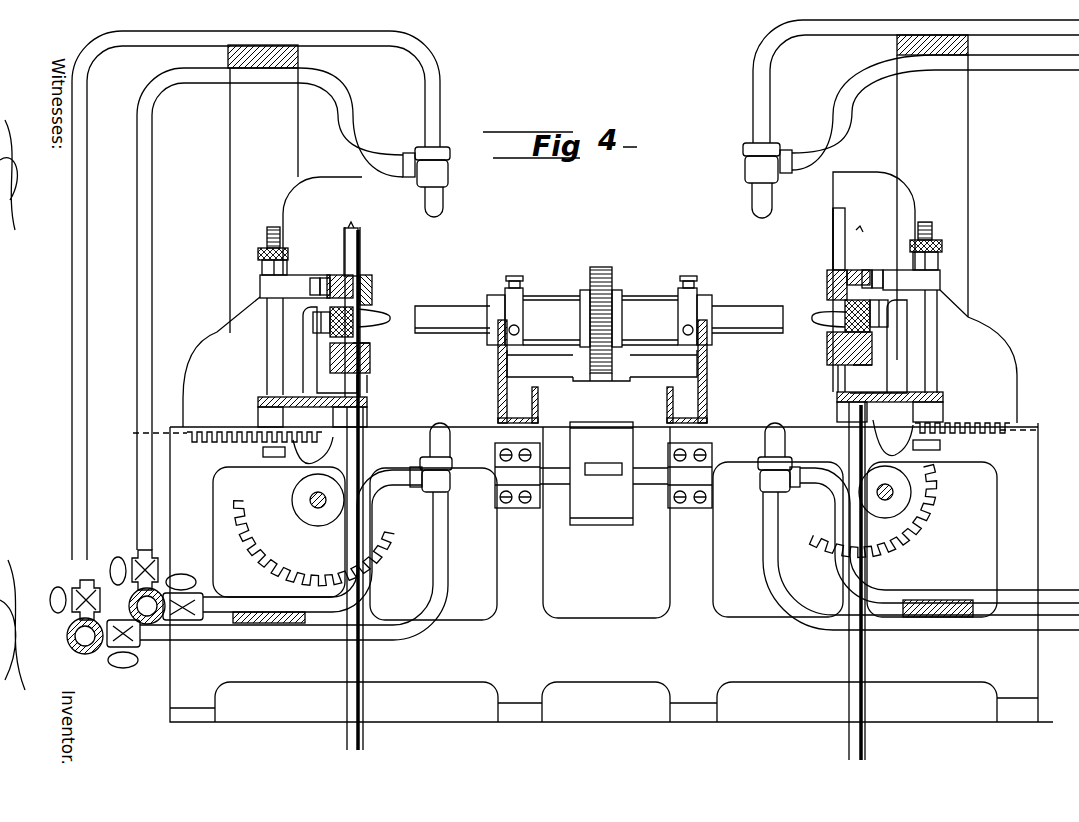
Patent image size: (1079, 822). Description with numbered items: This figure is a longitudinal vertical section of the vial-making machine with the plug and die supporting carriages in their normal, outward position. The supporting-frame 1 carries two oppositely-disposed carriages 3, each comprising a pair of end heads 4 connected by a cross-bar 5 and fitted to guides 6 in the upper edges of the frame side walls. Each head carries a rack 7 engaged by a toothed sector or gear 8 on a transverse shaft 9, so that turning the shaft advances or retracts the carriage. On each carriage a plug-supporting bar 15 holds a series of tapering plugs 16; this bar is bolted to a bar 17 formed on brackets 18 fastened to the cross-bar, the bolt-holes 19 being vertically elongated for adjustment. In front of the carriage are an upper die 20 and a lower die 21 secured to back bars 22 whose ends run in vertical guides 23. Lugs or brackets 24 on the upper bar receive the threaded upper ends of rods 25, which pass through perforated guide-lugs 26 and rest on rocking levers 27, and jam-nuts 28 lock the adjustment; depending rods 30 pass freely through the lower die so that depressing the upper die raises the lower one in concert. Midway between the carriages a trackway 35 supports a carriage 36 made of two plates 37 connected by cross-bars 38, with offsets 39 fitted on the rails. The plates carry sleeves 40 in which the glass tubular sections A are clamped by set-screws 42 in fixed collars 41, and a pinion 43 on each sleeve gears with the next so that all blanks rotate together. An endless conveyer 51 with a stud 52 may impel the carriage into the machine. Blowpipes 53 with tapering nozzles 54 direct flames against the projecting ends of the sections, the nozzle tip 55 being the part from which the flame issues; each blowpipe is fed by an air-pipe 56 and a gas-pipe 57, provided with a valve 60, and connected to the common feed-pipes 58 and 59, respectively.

The supporting-frame 1 is at (1010, 550).
The carriage 3 is at (603, 374).
The end head 4 is at (297, 200).
The cross-bar 5 is at (232, 402).
The guide 6 is at (589, 431).
The rack 7 is at (240, 443).
The toothed sector or gear 8 is at (268, 535).
The transverse shaft 9 is at (320, 503).
The plug-supporting bar 15 is at (368, 297).
The tapering plug 16 is at (370, 310).
The bar 17 is at (312, 314).
The bracket 18 is at (295, 360).
The bolt-hole 19 is at (372, 355).
The upper die 20 is at (370, 294).
The lower die 21 is at (372, 338).
The back bar 22 is at (366, 375).
The vertical guide 23 is at (875, 216).
The lug or bracket 24 is at (260, 290).
The rod 25 is at (344, 236).
The perforated guide-lug 26 is at (262, 410).
The rocking lever 27 is at (277, 463).
The jam-nut 28 is at (260, 251).
The depending rod 30 is at (363, 660).
The trackway 35 is at (500, 408).
The carriage 36 is at (710, 365).
The plate 37 is at (733, 350).
The cross-bar 38 is at (662, 378).
The offset 39 is at (622, 379).
The sleeve 40 is at (625, 296).
The fixed collar 41 is at (514, 318).
The set-screw 42 is at (512, 278).
The pinion 43 is at (604, 266).
The endless conveyer 51 is at (624, 525).
The stud 52 is at (598, 475).
The blowpipe 53 is at (428, 455).
The tapering nozzle 54 is at (432, 212).
The nozzle tip 55 is at (448, 195).
The air-pipe 56 is at (440, 92).
The gas-pipe 57 is at (208, 77).
The air feed-pipe 58 is at (67, 636).
The gas feed-pipe 59 is at (152, 615).
The valve 60 is at (110, 572).
The glass tubular section A is at (445, 307).